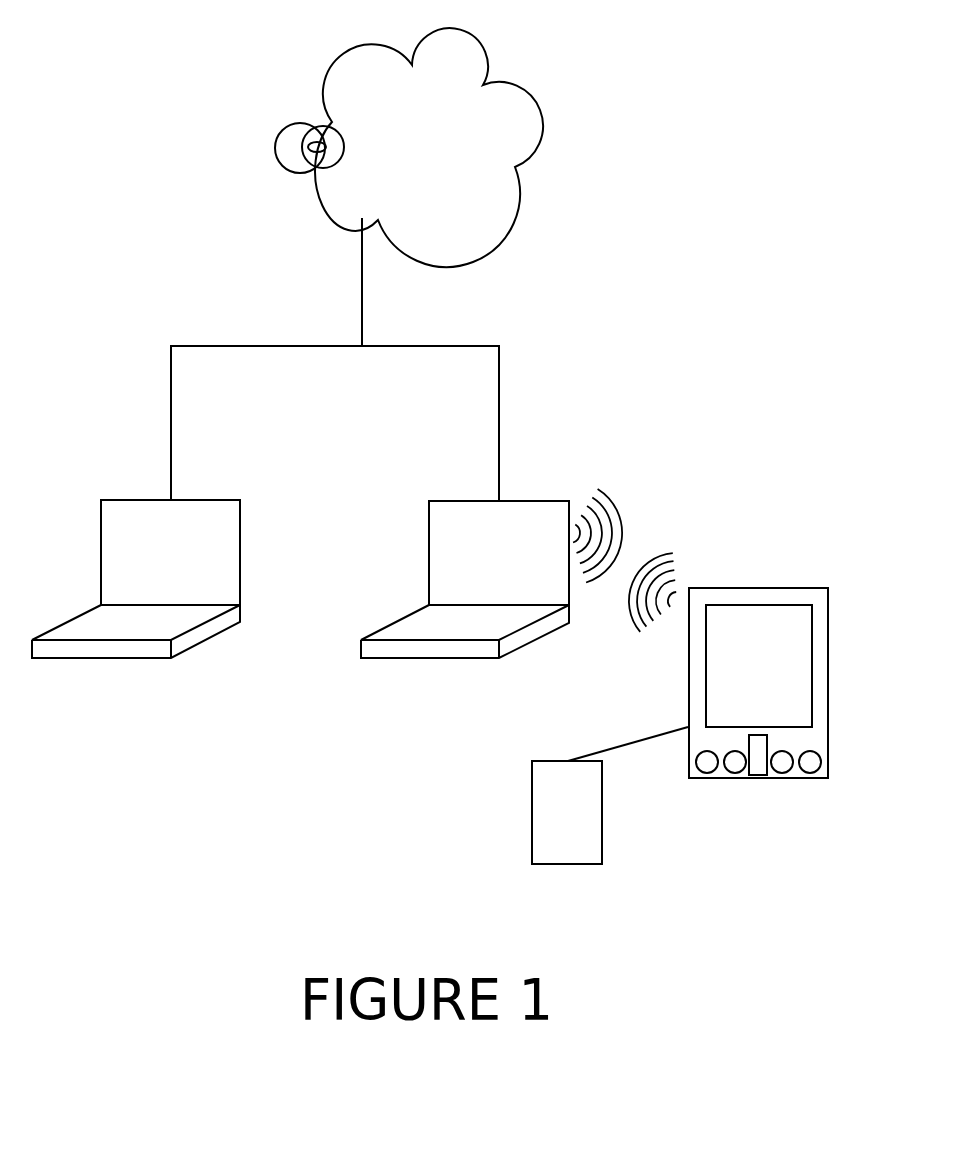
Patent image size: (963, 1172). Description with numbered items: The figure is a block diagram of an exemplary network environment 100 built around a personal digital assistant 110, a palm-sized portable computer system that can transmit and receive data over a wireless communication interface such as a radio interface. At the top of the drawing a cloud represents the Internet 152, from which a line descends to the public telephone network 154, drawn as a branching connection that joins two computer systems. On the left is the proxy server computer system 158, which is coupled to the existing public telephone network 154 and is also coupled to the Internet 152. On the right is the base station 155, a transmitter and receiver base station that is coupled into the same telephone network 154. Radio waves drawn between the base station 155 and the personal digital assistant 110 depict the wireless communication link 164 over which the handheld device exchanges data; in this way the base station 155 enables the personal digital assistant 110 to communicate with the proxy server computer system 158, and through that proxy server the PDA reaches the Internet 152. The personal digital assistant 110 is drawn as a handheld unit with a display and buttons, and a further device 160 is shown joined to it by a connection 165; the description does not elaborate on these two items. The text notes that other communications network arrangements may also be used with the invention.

The network environment 100 is at (100, 29).
The personal digital assistant 110 is at (793, 588).
The Internet 152 is at (537, 165).
The public telephone network 154 is at (206, 345).
The base station 155 is at (429, 515).
The proxy server computer system 158 is at (101, 533).
The peripheral device 160 is at (565, 864).
The wireless link 164 is at (655, 537).
The wired connection 165 is at (618, 747).